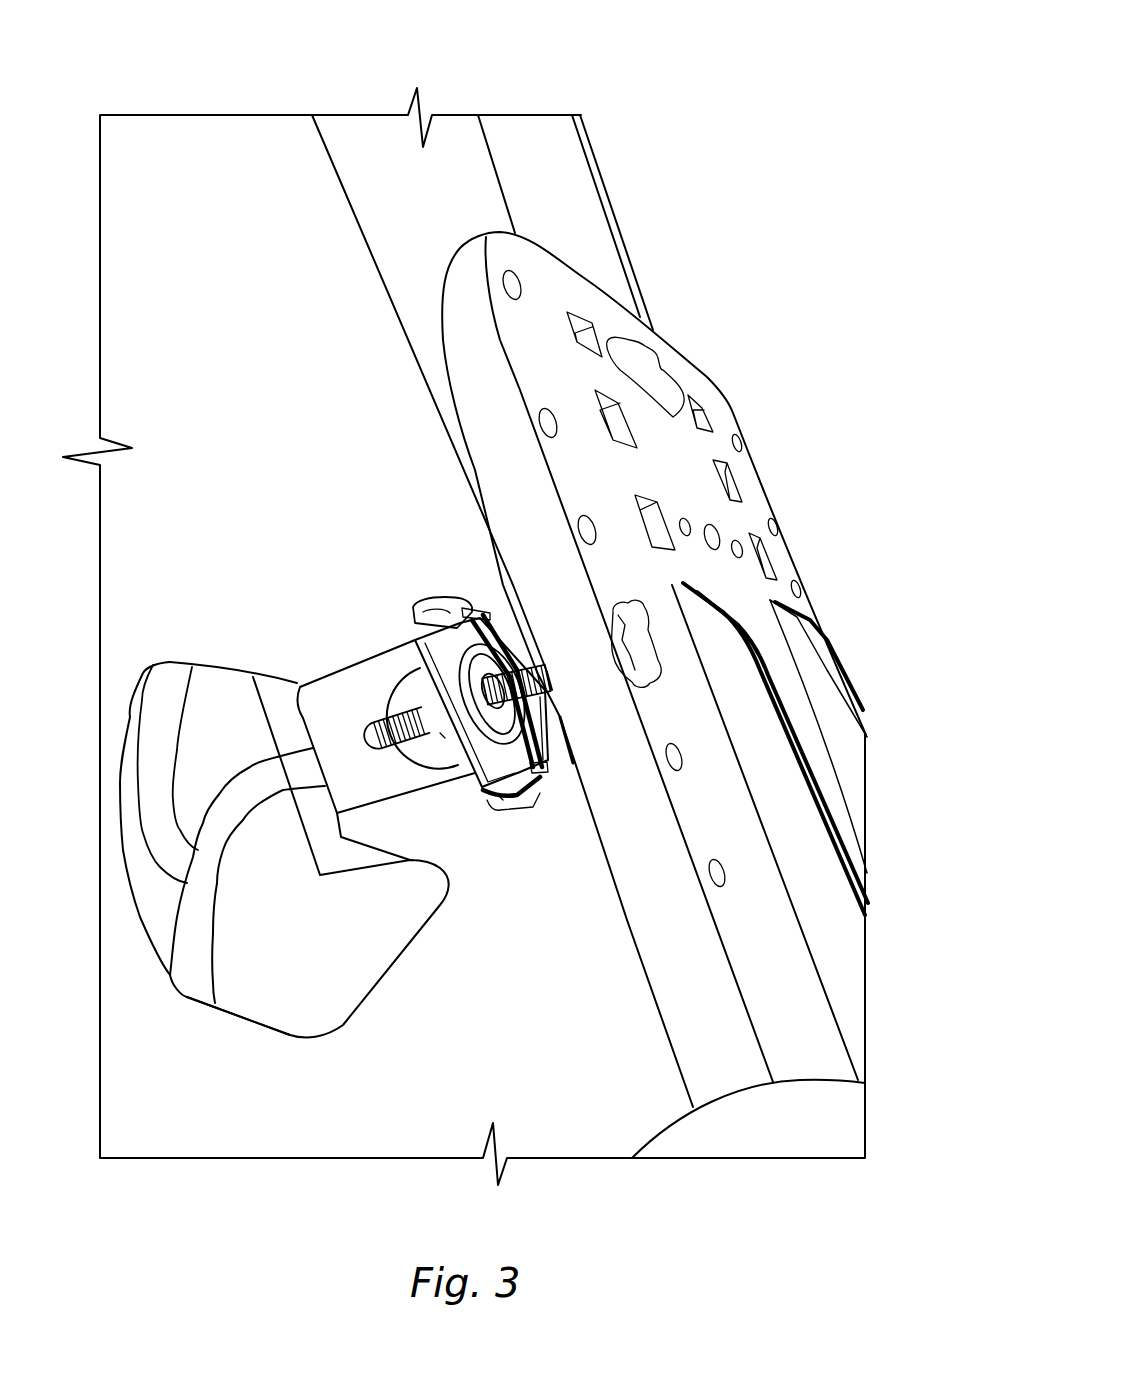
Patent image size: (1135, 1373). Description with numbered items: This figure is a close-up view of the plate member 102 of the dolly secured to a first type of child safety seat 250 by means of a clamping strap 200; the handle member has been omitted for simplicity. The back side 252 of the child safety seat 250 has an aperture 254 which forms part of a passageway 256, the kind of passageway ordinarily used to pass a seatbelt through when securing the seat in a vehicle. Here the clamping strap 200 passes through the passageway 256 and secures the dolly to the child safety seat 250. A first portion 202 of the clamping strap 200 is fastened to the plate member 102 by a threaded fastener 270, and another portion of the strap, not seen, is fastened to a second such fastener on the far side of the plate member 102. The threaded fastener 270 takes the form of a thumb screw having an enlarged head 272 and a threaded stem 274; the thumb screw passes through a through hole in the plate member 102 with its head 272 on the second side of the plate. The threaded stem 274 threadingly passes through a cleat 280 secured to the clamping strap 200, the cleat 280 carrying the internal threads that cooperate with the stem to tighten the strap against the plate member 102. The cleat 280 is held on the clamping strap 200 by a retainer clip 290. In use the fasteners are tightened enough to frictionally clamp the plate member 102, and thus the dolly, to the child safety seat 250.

The child safety seat 250 is at (262, 150).
The back side 252 is at (435, 253).
The plate member 102 is at (731, 411).
The threaded stem 274 is at (387, 713).
The first portion 202 is at (412, 677).
The enlarged head 272 is at (650, 647).
The cleat 280 is at (442, 735).
The threaded fastener 270 is at (655, 687).
The clamping strap 200 is at (442, 780).
The retainer clip 290 is at (505, 802).
The passageway 256 is at (244, 979).
The aperture 254 is at (350, 952).